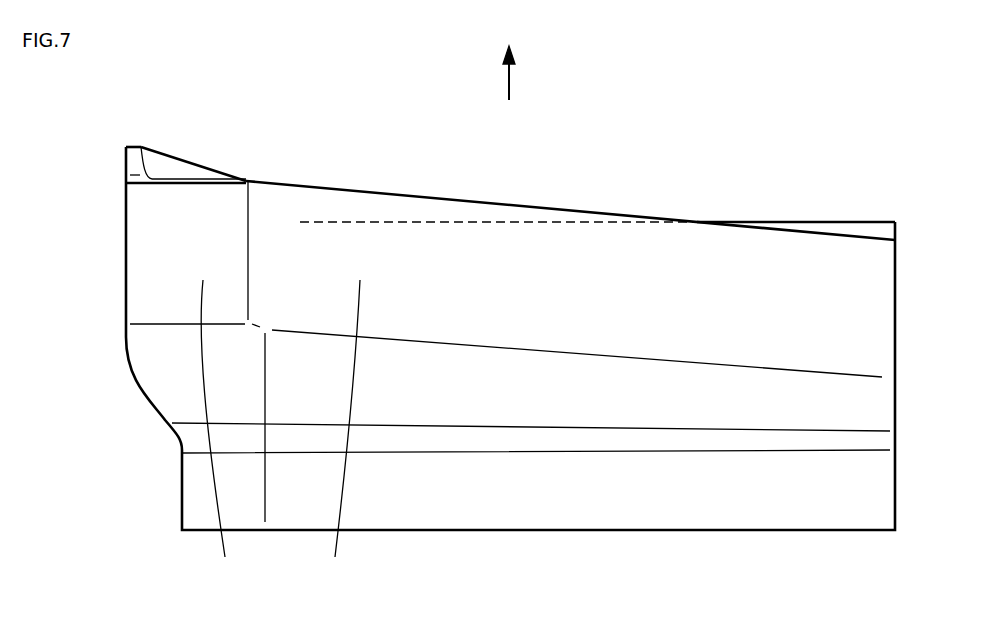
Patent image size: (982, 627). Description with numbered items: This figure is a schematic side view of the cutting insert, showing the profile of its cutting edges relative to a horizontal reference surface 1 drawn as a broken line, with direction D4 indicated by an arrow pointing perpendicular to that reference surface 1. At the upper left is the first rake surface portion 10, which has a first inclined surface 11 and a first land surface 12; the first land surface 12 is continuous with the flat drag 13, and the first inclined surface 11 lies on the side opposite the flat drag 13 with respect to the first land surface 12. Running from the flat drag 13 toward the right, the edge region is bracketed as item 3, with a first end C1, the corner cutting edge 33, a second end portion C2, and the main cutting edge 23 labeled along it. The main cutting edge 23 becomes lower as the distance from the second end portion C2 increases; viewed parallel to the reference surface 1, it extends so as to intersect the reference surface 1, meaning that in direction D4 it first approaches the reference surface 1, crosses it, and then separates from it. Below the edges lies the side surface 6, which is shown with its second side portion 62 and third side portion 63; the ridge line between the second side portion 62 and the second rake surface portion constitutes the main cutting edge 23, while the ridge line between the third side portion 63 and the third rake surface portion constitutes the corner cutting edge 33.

The reference surface 1 is at (546, 222).
The rake face portion 3 is at (111, 82).
The side surface 6 is at (207, 584).
The first rake surface portion 10 is at (72, 180).
The first inclined surface 11 is at (136, 176).
The first land surface 12 is at (173, 170).
The flat drag 13 is at (126, 158).
The main cutting edge 23 is at (357, 187).
The corner cutting edge 33 is at (193, 178).
The second side portion 62 is at (341, 432).
The third side portion 63 is at (218, 432).
The first corner C1 is at (130, 172).
The second end portion C2 is at (248, 181).
The direction perpendicular to reference surface D4 is at (505, 83).